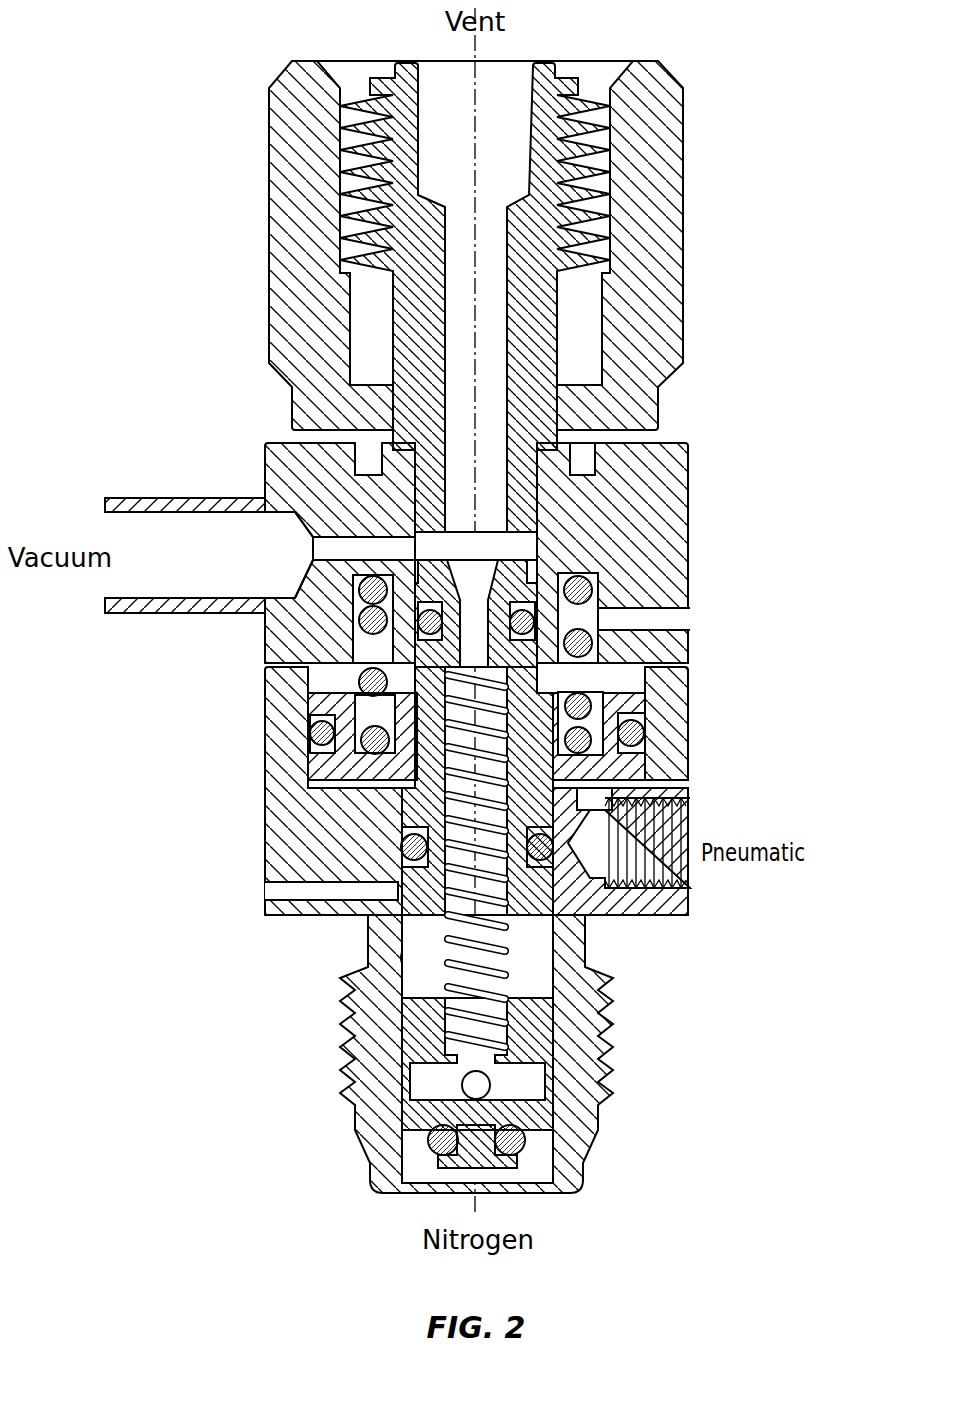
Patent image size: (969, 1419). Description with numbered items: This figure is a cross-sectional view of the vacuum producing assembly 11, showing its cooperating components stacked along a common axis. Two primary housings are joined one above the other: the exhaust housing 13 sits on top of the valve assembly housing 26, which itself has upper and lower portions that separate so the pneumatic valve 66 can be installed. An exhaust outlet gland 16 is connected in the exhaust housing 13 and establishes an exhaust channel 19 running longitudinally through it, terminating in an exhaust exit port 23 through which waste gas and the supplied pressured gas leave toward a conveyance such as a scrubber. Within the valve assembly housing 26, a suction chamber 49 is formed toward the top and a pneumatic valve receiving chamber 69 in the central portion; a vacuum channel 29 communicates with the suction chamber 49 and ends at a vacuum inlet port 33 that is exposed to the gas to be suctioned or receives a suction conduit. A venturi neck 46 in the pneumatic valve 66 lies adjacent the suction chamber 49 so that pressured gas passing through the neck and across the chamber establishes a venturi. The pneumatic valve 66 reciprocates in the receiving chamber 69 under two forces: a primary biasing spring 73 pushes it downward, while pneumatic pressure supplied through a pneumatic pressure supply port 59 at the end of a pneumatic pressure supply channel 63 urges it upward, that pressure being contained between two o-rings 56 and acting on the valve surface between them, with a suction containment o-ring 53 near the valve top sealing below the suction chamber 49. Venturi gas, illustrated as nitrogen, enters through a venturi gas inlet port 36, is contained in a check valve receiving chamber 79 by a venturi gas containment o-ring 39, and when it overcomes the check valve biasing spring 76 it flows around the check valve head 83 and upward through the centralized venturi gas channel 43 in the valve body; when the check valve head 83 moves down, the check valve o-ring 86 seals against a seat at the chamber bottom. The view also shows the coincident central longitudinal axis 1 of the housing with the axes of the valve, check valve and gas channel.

The central longitudinal axis 1 is at (478, 1214).
The vacuum producing assembly 11 is at (197, 85).
The exhaust housing 13 is at (680, 128).
The exhaust outlet gland 16 is at (545, 80).
The exhaust channel 19 is at (495, 340).
The exhaust exit port 23 is at (428, 47).
The valve assembly housing 26 is at (718, 500).
The vacuum channel 29 is at (210, 530).
The vacuum inlet port 33 is at (100, 530).
The venturi gas inlet port 36 is at (418, 1215).
The venturi gas containment o-ring 39 is at (553, 998).
The venturi gas channel 43 is at (530, 905).
The venturi neck 46 is at (493, 548).
The suction chamber 49 is at (672, 452).
The suction containment o-ring 53 is at (415, 625).
The o-rings 56 is at (650, 732).
The pneumatic pressure supply port 59 is at (718, 822).
The pneumatic pressure supply channel 63 is at (590, 797).
The pneumatic valve 66 is at (423, 805).
The pneumatic valve receiving chamber 69 is at (585, 683).
The primary biasing spring 73 is at (483, 592).
The check valve biasing spring 76 is at (485, 990).
The check valve receiving chamber 79 is at (550, 1083).
The check valve head 83 is at (437, 1040).
The check valve o-ring 86 is at (525, 1150).